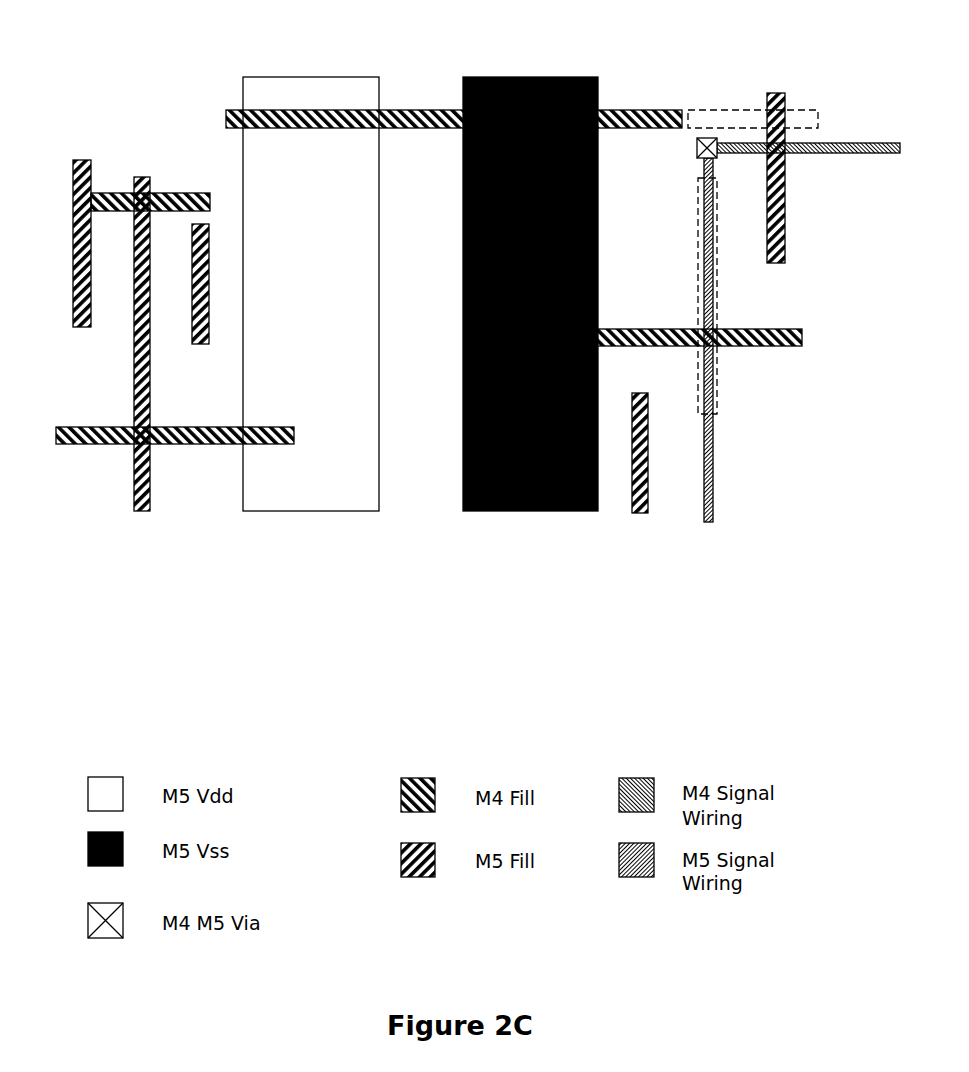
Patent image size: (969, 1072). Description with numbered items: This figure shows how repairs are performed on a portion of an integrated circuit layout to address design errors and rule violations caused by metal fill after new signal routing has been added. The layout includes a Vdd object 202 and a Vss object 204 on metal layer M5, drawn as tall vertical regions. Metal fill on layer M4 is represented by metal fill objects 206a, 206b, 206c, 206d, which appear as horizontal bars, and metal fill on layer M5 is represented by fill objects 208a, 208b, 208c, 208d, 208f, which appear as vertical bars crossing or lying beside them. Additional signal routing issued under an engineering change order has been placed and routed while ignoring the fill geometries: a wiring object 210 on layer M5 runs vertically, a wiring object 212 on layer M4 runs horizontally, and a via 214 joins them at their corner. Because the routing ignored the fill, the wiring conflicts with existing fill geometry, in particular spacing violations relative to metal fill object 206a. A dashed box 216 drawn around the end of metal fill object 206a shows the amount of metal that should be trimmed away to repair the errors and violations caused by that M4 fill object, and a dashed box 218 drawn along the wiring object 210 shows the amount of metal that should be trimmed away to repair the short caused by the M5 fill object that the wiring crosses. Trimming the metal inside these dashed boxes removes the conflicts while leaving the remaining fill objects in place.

The Vdd object 202 is at (302, 77).
The Vss object 204 is at (518, 77).
The metal fill object 206a is at (660, 128).
The metal fill object 206b is at (183, 193).
The metal fill object 206c is at (767, 346).
The metal fill object 206d is at (180, 445).
The fill object 208a is at (75, 305).
The fill object 208b is at (133, 492).
The fill object 208c is at (197, 343).
The fill object 208d is at (632, 513).
The fill object 208f is at (786, 227).
The wiring object 210 is at (712, 442).
The wiring object 212 is at (805, 152).
The via 214 is at (697, 152).
The dashed box 216 is at (716, 110).
The dashed box 218 is at (700, 414).